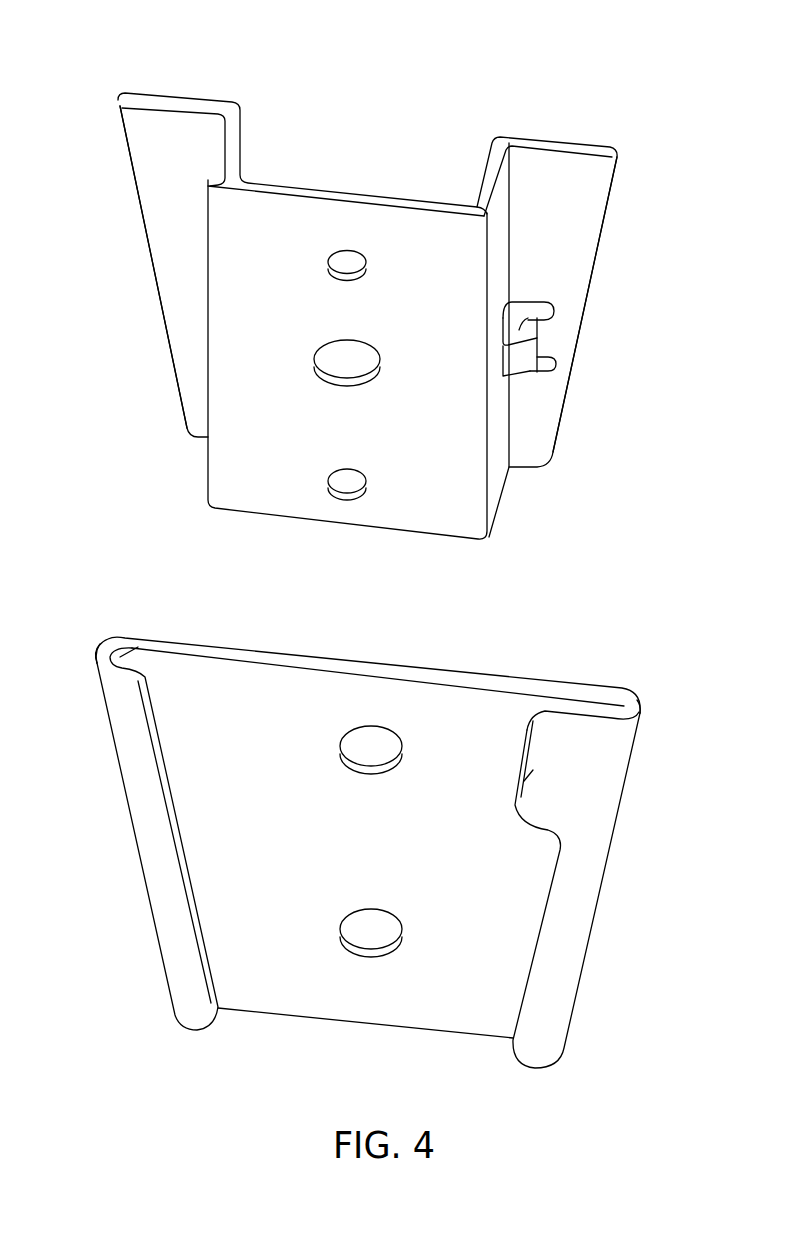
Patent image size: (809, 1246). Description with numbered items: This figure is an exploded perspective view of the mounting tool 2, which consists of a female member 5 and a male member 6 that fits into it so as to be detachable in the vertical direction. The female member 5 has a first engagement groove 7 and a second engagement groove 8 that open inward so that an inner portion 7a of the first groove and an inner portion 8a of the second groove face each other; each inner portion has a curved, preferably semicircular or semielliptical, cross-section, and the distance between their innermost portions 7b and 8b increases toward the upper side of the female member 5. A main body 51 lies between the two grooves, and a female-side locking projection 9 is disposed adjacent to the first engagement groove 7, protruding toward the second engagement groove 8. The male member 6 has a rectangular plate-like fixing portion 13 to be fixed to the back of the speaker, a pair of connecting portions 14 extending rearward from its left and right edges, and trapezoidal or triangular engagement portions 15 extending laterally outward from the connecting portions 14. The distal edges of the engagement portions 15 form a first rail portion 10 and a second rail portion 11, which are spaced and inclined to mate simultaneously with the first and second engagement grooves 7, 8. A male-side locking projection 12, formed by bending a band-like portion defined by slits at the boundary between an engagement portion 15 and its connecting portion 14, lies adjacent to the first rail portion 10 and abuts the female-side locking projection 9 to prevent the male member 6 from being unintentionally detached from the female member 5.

The mounting tool 2 is at (570, 106).
The female member 5 is at (520, 670).
The male member 6 is at (311, 180).
The first engagement groove 7 is at (577, 937).
The inner portion of the first engagement groove 7a is at (618, 707).
The innermost portion of the inner portion of the first engagement groove 7b is at (632, 693).
The second engagement groove 8 is at (153, 863).
The inner portion of the second engagement groove 8a is at (150, 640).
The innermost portion of the inner portion of the second engagement groove 8b is at (110, 652).
The female-side locking projection 9 is at (503, 797).
The first rail portion 10 is at (580, 343).
The second rail portion 11 is at (140, 228).
The male-side locking projection 12 is at (517, 305).
The fixing portion 13 is at (383, 193).
The connecting portion 14 is at (240, 157).
The engagement portion 15 is at (186, 131).
The main body 51 is at (293, 677).